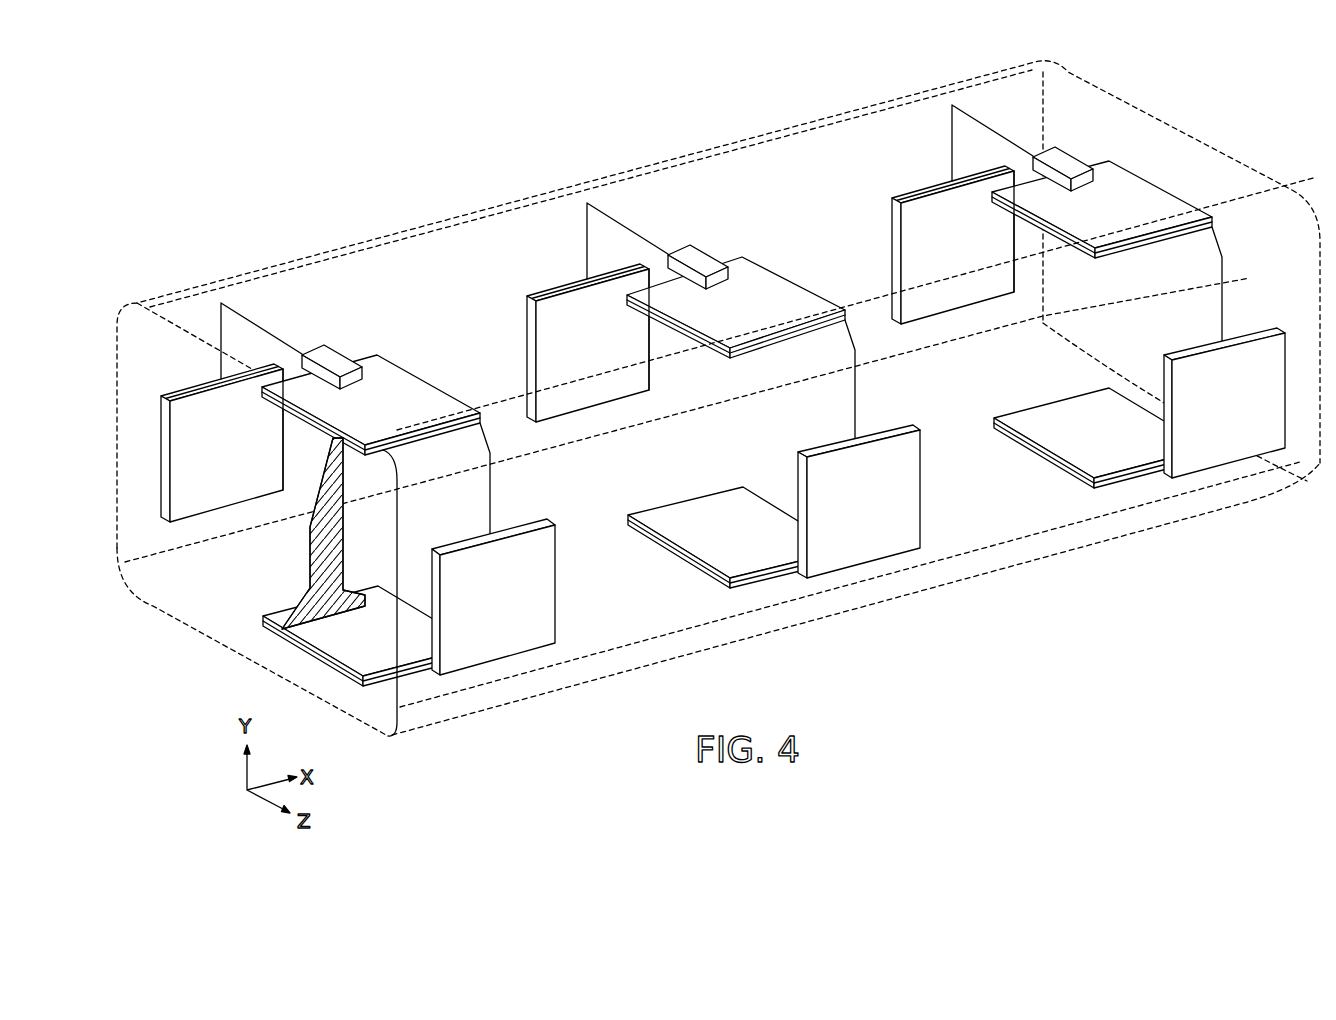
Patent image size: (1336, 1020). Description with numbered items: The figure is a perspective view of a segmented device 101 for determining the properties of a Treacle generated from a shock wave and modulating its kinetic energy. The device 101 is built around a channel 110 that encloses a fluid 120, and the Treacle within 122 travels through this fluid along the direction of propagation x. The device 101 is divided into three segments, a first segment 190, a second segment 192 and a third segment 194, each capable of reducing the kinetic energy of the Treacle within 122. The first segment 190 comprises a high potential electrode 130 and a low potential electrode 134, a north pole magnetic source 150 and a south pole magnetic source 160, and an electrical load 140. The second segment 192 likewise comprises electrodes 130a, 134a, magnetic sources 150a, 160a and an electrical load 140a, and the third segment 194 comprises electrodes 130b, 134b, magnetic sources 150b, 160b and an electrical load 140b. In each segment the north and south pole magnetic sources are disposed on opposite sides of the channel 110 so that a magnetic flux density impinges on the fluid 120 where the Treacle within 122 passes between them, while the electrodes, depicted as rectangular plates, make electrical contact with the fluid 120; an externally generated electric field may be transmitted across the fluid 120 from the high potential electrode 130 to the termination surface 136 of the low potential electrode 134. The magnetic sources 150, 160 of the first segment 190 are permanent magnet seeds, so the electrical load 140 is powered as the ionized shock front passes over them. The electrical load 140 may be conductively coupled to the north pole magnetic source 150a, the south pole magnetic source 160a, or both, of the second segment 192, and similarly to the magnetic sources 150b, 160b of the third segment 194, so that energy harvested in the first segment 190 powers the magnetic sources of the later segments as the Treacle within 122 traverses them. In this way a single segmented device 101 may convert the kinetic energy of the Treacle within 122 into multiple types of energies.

The segmented device 101 is at (360, 216).
The channel 110 is at (452, 226).
The fluid 120 is at (197, 586).
The Treacle 122 is at (311, 577).
The high potential electrode 130 is at (555, 623).
The high potential electrode of the second segment 130a is at (921, 522).
The high potential electrode of the third segment 130b is at (1212, 458).
The low potential electrode 134 is at (174, 522).
The low potential electrode of the second segment 134a is at (537, 424).
The low potential electrode of the third segment 134b is at (903, 326).
The termination surface 136 is at (217, 500).
The electrical load 140 is at (330, 351).
The electrical load of the second segment 140a is at (692, 251).
The electrical load of the third segment 140b is at (1059, 156).
The north pole magnetic source 150 is at (263, 616).
The north pole magnetic source of the second segment 150a is at (628, 515).
The north pole magnetic source of the third segment 150b is at (994, 418).
The south pole magnetic source 160 is at (424, 388).
The south pole magnetic source of the second segment 160a is at (790, 288).
The south pole magnetic source of the third segment 160b is at (1156, 191).
The first segment 190 is at (208, 300).
The second segment 192 is at (574, 207).
The third segment 194 is at (941, 106).